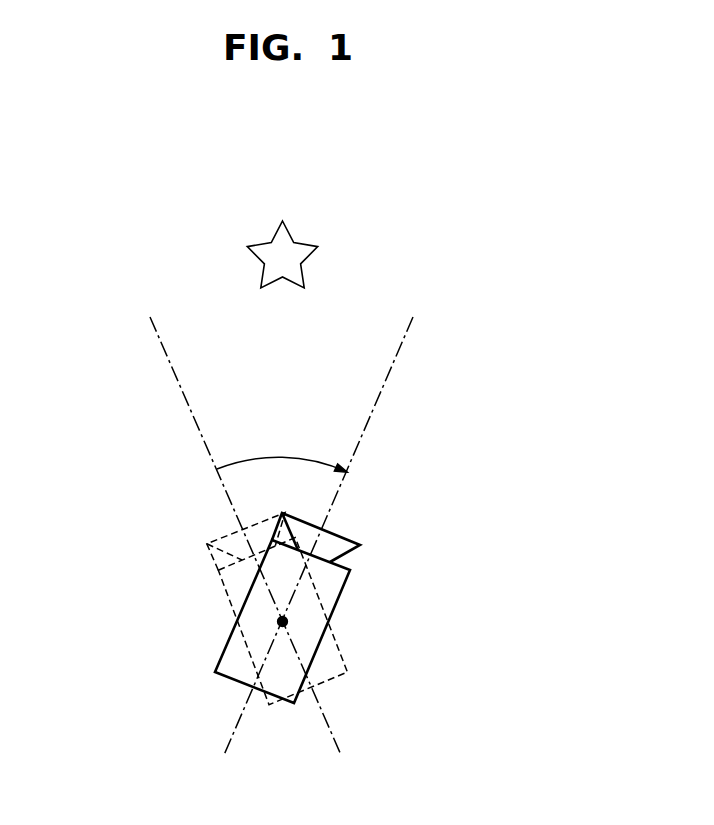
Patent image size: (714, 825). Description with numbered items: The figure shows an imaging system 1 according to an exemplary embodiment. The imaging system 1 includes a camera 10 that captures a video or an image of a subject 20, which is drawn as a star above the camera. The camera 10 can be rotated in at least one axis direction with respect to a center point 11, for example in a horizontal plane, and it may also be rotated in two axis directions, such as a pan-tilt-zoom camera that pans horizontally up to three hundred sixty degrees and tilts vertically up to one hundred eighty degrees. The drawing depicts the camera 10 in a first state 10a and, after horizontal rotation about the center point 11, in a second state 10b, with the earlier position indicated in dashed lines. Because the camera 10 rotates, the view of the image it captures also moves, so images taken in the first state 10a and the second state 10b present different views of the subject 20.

The imaging system 1 is at (488, 487).
The camera 10 is at (110, 585).
The first state 10a is at (226, 590).
The second state 10b is at (232, 648).
The center point 11 is at (288, 622).
The subject 20 is at (300, 243).